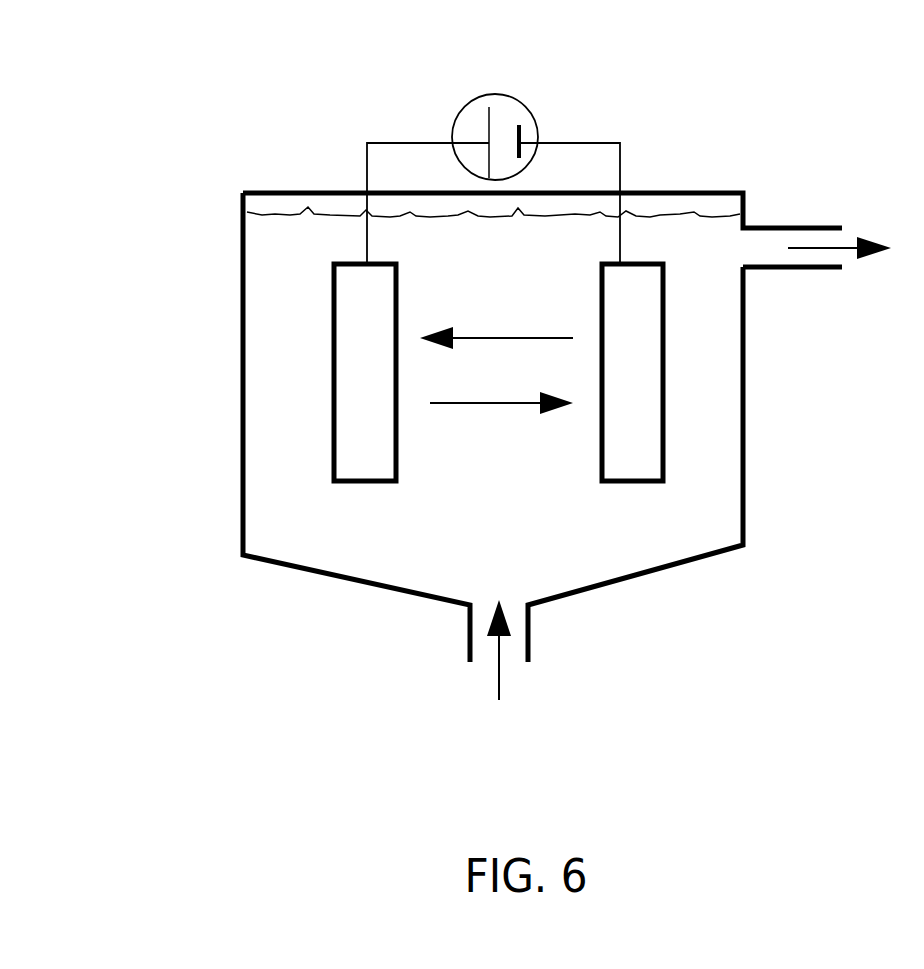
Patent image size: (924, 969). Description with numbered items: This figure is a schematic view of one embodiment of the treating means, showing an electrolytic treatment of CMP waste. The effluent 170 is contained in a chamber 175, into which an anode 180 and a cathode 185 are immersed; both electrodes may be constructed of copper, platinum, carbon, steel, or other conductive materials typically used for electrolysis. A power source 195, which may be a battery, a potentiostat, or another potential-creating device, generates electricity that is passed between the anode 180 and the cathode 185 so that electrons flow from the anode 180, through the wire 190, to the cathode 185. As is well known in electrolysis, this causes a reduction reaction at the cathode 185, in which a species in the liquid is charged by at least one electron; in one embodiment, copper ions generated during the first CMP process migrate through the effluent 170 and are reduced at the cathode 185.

The effluent 170 is at (480, 535).
The chamber 175 is at (232, 391).
The anode 180 is at (385, 377).
The cathode 185 is at (614, 377).
The wire 190 is at (394, 132).
The power source 195 is at (538, 95).